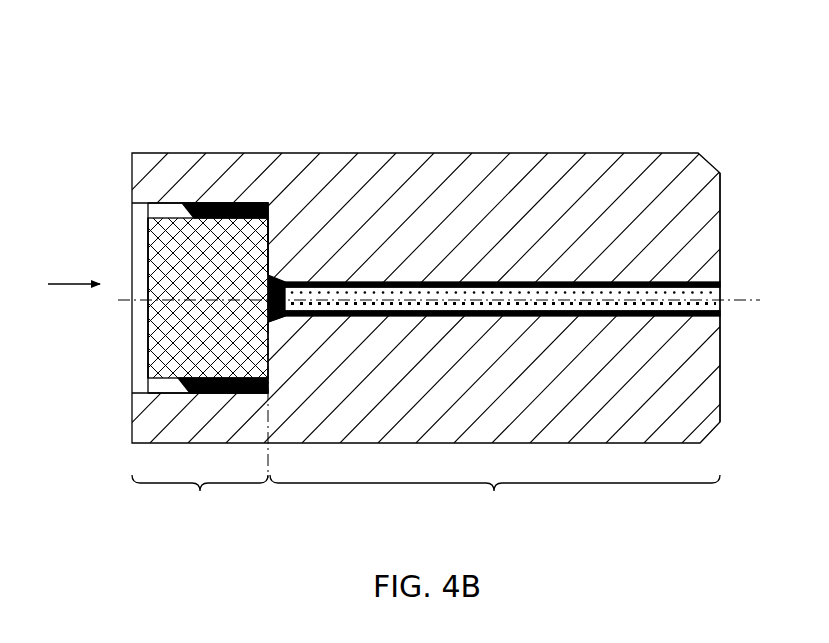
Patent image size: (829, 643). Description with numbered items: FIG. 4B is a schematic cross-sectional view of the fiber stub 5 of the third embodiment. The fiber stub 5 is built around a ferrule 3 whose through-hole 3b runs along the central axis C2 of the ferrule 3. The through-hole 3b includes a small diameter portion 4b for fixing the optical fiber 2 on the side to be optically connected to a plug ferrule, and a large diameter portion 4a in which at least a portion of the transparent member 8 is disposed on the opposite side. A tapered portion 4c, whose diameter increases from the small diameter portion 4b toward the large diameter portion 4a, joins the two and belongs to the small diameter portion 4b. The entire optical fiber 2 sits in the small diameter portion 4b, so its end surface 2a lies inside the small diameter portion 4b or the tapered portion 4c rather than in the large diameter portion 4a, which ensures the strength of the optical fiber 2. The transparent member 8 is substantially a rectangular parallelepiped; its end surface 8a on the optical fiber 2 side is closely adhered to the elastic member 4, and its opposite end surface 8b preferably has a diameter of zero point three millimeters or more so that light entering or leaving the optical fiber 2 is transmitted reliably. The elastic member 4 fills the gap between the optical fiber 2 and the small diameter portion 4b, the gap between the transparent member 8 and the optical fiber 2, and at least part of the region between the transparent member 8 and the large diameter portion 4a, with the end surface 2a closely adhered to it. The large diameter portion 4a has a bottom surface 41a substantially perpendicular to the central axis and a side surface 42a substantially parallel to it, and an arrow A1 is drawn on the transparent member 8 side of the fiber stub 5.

The optical fiber 2 is at (575, 292).
The end surface of the optical fiber 2a is at (283, 303).
The ferrule 3 is at (498, 200).
The through-hole 3b is at (724, 282).
The elastic member 4 is at (222, 210).
The large diameter portion 4a is at (200, 501).
The small diameter portion 4b is at (495, 501).
The tapered portion 4c is at (282, 330).
The optical connector ferrule assembly 5 is at (624, 91).
The transparent member 8 is at (178, 240).
The end surface of the transparent member 8a is at (271, 246).
The first end surface of the transparent member 8b is at (146, 333).
The bottom surface of the large diameter portion 41a is at (268, 265).
The side surface of the large diameter portion 42a is at (145, 208).
The insertion direction A1 is at (74, 271).
The central axis of the ferrule C2 is at (732, 300).